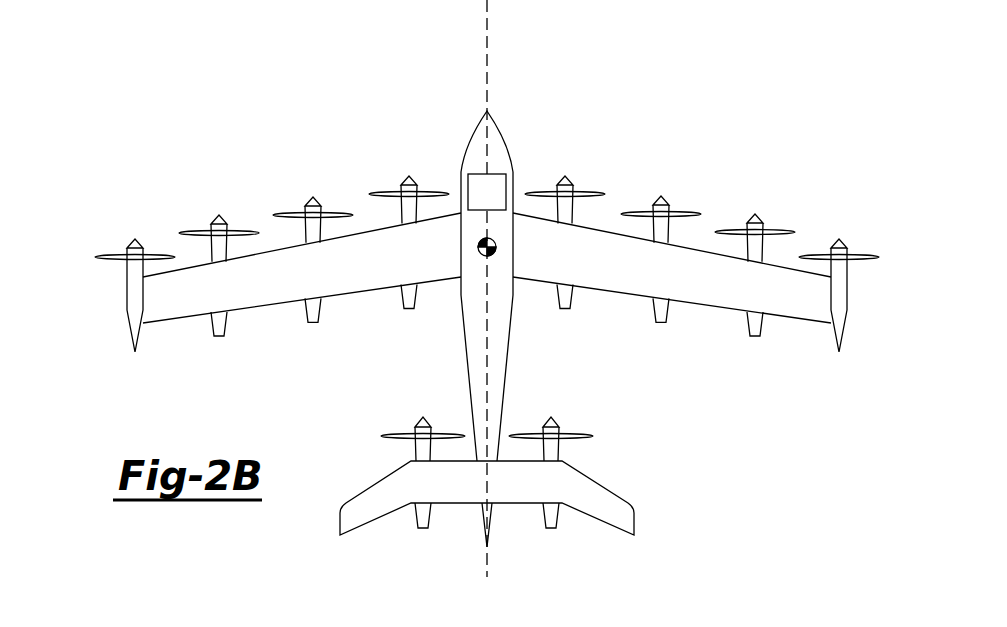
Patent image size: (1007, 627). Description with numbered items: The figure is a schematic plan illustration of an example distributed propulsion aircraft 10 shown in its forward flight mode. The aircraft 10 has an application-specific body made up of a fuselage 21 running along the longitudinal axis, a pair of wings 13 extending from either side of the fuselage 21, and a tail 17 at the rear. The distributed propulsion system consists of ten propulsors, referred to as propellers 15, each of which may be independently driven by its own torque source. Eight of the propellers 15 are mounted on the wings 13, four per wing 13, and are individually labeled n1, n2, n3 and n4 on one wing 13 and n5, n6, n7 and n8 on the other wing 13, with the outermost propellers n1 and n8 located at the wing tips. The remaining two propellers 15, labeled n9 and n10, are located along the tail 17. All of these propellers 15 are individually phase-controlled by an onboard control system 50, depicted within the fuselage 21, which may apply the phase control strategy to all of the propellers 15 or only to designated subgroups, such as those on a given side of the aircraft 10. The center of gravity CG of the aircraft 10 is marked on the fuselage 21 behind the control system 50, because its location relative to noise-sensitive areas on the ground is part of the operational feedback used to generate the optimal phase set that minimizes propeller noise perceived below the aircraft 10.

The aircraft 10 is at (305, 44).
The wing 13 is at (268, 285).
The propeller 15 is at (70, 240).
The tail 17 is at (457, 488).
The fuselage 21 is at (514, 347).
The onboard control system 50 is at (487, 192).
The center of gravity CG is at (478, 247).
The propulsor 1 n1 is at (135, 278).
The propulsor 2 n2 is at (219, 260).
The propulsor 3 n3 is at (313, 244).
The propulsor 4 n4 is at (409, 227).
The propulsor 5 n5 is at (565, 227).
The propulsor 6 n6 is at (661, 244).
The propulsor 7 n7 is at (755, 260).
The propulsor 8 n8 is at (839, 279).
The propulsor 9 n9 is at (423, 455).
The propulsor 10 n10 is at (551, 455).